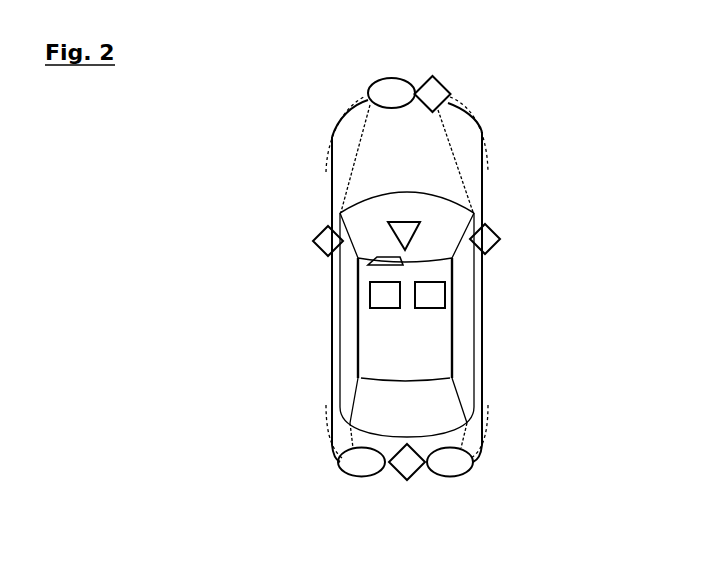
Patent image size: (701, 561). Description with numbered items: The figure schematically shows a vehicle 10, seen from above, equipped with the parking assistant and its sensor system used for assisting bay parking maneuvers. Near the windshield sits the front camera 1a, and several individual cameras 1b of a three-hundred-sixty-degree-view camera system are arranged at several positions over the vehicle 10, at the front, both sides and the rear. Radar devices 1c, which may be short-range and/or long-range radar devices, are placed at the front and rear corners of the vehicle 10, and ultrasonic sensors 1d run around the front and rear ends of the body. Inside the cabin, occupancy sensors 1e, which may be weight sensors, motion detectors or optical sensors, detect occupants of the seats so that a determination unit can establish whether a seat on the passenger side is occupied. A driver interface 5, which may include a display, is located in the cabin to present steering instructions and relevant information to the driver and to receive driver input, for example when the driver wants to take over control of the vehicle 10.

The vehicle 10 is at (268, 174).
The front camera 1a is at (389, 234).
The individual cameras 1b is at (432, 76).
The radar devices 1c is at (387, 79).
The ultrasonic sensors 1d is at (492, 128).
The occupancy sensors 1e is at (434, 310).
The driver interface 5 is at (366, 266).